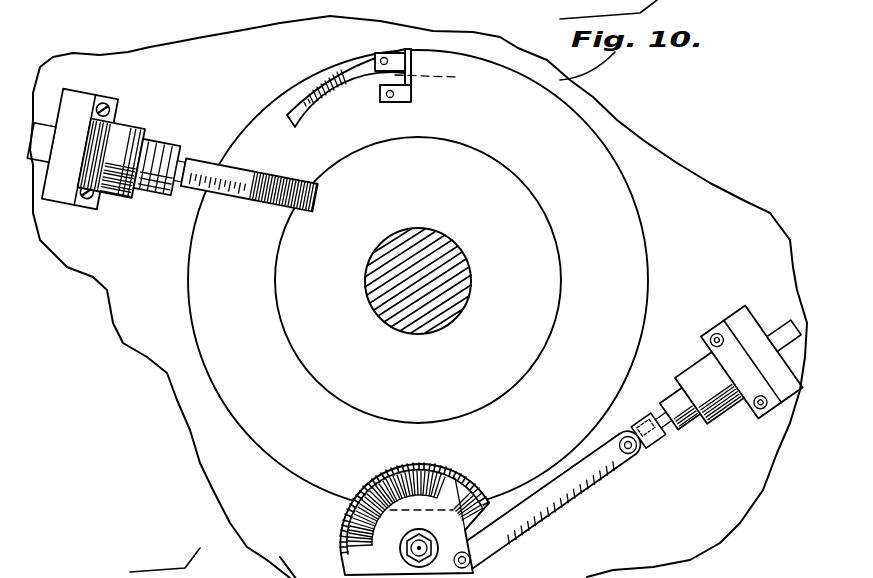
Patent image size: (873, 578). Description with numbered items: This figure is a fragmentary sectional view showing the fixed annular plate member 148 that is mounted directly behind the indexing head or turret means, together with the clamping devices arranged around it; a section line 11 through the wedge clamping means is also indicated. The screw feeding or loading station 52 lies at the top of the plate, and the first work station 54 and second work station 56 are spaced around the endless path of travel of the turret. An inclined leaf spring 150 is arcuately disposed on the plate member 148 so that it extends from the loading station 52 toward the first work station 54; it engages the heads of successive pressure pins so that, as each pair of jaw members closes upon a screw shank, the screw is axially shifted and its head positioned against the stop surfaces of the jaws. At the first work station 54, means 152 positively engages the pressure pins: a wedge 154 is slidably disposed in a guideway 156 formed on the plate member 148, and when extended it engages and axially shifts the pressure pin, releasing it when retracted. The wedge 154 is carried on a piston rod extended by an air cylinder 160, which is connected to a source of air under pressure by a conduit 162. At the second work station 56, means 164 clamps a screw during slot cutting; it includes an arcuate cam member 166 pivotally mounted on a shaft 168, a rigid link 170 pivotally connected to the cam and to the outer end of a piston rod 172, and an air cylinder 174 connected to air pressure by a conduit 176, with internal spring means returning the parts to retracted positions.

The section line 11- 11 is at (447, 62).
The loading station 52 is at (427, 53).
The first work station 54 is at (273, 213).
The second work station 56 is at (392, 460).
The annular plate member 148 is at (602, 152).
The inclined leaf spring 150 is at (342, 89).
The means for positively engaging the pressure pins 152 is at (129, 108).
The wedge 154 is at (197, 170).
The guideway 156 is at (292, 175).
The air cylinder 160 is at (68, 197).
The conduit 162 is at (50, 100).
The means for engaging a pressure pin 164 is at (545, 524).
The arcuate cam member 166 is at (370, 565).
The shaft 168 is at (403, 532).
The rigid link 170 is at (593, 480).
The piston rod 172 is at (677, 426).
The air cylinder 174 is at (727, 413).
The conduit 176 is at (786, 330).